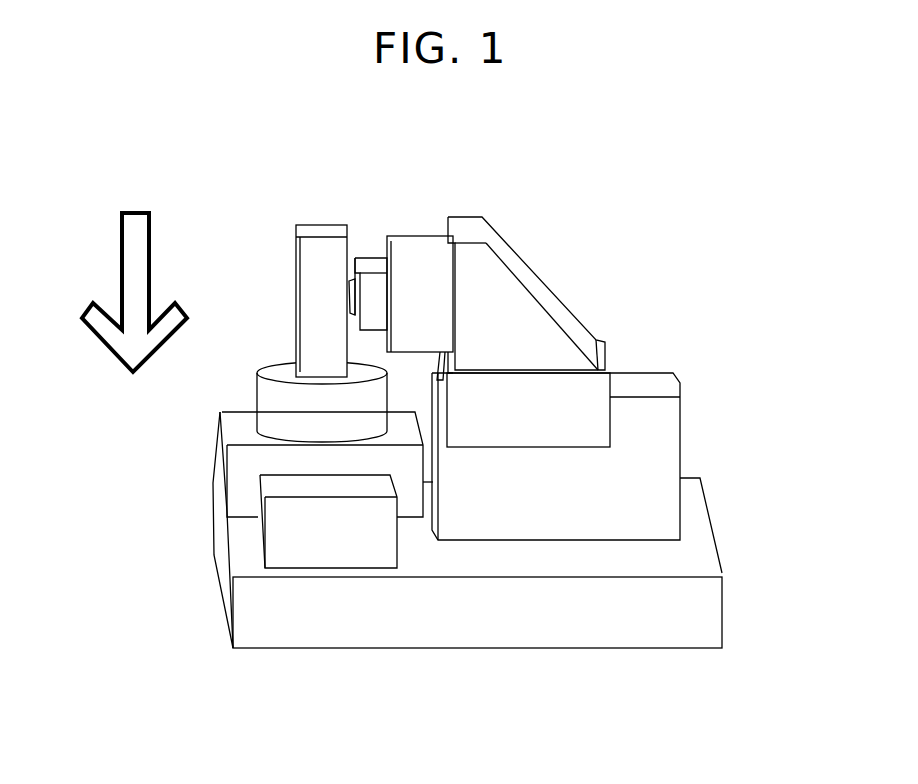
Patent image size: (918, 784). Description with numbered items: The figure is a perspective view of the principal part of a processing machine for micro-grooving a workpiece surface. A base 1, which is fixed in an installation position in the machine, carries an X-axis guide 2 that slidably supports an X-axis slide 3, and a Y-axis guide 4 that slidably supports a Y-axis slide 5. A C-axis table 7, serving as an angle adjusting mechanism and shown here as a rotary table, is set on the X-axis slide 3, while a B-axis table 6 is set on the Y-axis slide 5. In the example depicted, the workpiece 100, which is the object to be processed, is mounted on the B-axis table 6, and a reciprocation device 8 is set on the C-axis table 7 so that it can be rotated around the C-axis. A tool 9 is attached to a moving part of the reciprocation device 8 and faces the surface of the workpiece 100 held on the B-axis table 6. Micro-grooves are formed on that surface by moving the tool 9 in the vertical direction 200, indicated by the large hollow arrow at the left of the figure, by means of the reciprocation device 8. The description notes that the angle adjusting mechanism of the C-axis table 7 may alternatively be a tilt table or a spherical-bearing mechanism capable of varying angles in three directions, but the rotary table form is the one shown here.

The base 1 is at (565, 640).
The X-axis guide 2 is at (270, 530).
The X-axis slide 3 is at (227, 478).
The Y-axis guide 4 is at (664, 431).
The Y-axis slide 5 is at (576, 383).
The B-axis table 6 is at (441, 258).
The C-axis table 7 is at (264, 410).
The reciprocation device 8 is at (286, 263).
The tool 9 is at (343, 258).
The workpiece 100 is at (375, 237).
The vertical direction 200 is at (122, 273).